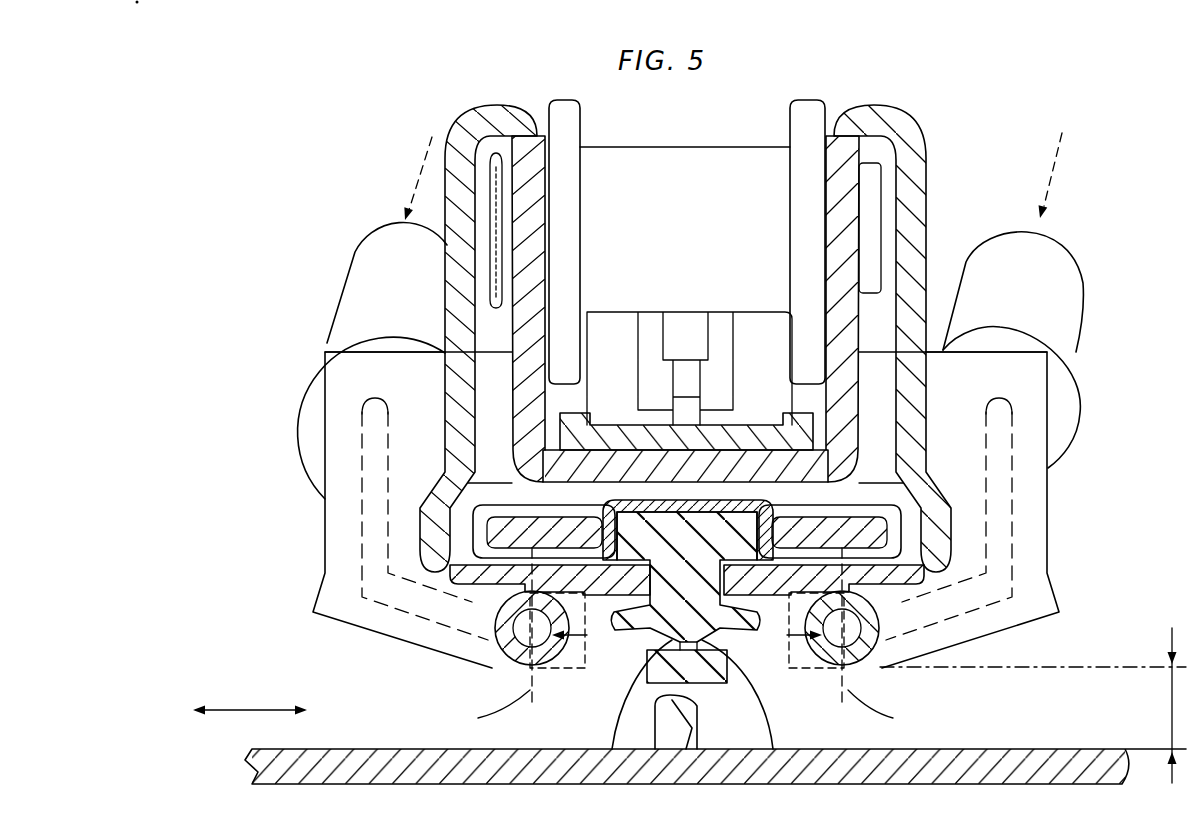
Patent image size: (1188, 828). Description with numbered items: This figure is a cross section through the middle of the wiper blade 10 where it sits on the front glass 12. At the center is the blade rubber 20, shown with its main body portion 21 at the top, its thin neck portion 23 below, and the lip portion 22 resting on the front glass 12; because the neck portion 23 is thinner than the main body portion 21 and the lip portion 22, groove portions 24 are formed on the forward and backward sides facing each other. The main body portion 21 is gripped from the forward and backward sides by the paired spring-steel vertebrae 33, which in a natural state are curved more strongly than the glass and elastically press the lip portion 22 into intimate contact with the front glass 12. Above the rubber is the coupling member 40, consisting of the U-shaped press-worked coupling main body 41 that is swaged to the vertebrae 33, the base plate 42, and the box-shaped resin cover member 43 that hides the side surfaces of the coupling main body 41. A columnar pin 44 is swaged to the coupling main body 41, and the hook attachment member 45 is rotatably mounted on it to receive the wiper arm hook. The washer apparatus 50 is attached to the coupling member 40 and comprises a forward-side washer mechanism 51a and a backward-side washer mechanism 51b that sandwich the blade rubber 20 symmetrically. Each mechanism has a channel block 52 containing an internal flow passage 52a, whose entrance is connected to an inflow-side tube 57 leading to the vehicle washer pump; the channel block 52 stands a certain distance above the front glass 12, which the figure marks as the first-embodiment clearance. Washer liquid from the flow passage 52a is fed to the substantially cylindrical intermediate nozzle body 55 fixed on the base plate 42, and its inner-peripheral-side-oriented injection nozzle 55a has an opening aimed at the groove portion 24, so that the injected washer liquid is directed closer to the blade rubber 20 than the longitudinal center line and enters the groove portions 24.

The wiper blade 10 is at (639, 457).
The front glass 12 is at (258, 765).
The blade rubber 20 is at (689, 727).
The main body portion 21 is at (700, 545).
The lip portion 22 is at (663, 748).
The neck portion 23 is at (617, 763).
The groove portions 24 is at (738, 728).
The vertebrae 33 is at (490, 513).
The coupling member 40 is at (634, 336).
The coupling main body 41 is at (500, 385).
The base plate 42 is at (492, 580).
The cover member 43 is at (912, 258).
The columnar pin 44 is at (497, 262).
The hook attachment member 45 is at (677, 223).
The washer apparatus 50 is at (678, 453).
The forward-side washer mechanism 51a is at (338, 530).
The backward-side washer mechanism 51b is at (1038, 594).
The channel block 52 is at (343, 373).
The flow passage 52a is at (390, 507).
The intermediate nozzle body 55 is at (502, 648).
The inner-peripheral-side-oriented injection nozzle 55a is at (570, 650).
The inflow-side tube 57 is at (390, 252).